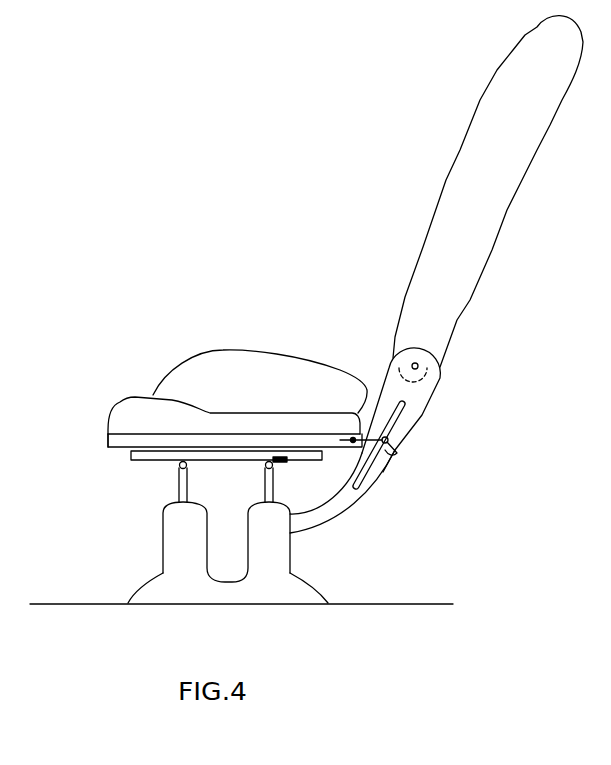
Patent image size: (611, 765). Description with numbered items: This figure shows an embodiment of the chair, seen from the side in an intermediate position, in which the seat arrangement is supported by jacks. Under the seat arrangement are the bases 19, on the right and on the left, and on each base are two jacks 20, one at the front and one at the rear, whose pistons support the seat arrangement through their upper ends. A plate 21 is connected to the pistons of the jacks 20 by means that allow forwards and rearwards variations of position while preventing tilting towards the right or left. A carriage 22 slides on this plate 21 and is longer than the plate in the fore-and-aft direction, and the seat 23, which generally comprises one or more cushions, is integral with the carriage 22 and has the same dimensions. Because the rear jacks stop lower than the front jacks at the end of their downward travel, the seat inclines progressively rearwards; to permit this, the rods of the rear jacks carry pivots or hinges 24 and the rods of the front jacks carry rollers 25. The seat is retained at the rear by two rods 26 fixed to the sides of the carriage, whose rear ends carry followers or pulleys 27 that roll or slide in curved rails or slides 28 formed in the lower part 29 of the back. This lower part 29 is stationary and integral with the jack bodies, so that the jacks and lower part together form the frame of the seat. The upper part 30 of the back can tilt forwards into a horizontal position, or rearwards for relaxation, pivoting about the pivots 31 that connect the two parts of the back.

The base 19 is at (275, 583).
The jack 20 is at (163, 540).
The plate 21 is at (132, 459).
The carriage 22 is at (107, 442).
The seat 23 is at (117, 403).
The pivots or hinges 24 is at (263, 468).
The rollers 25 is at (177, 468).
The rod 26 is at (387, 473).
The follower or pulley 27 is at (397, 457).
The curved rail or slide 28 is at (418, 427).
The lower part of the back 29 is at (433, 398).
The upper part of the back 30 is at (502, 222).
The pivot 31 is at (416, 362).